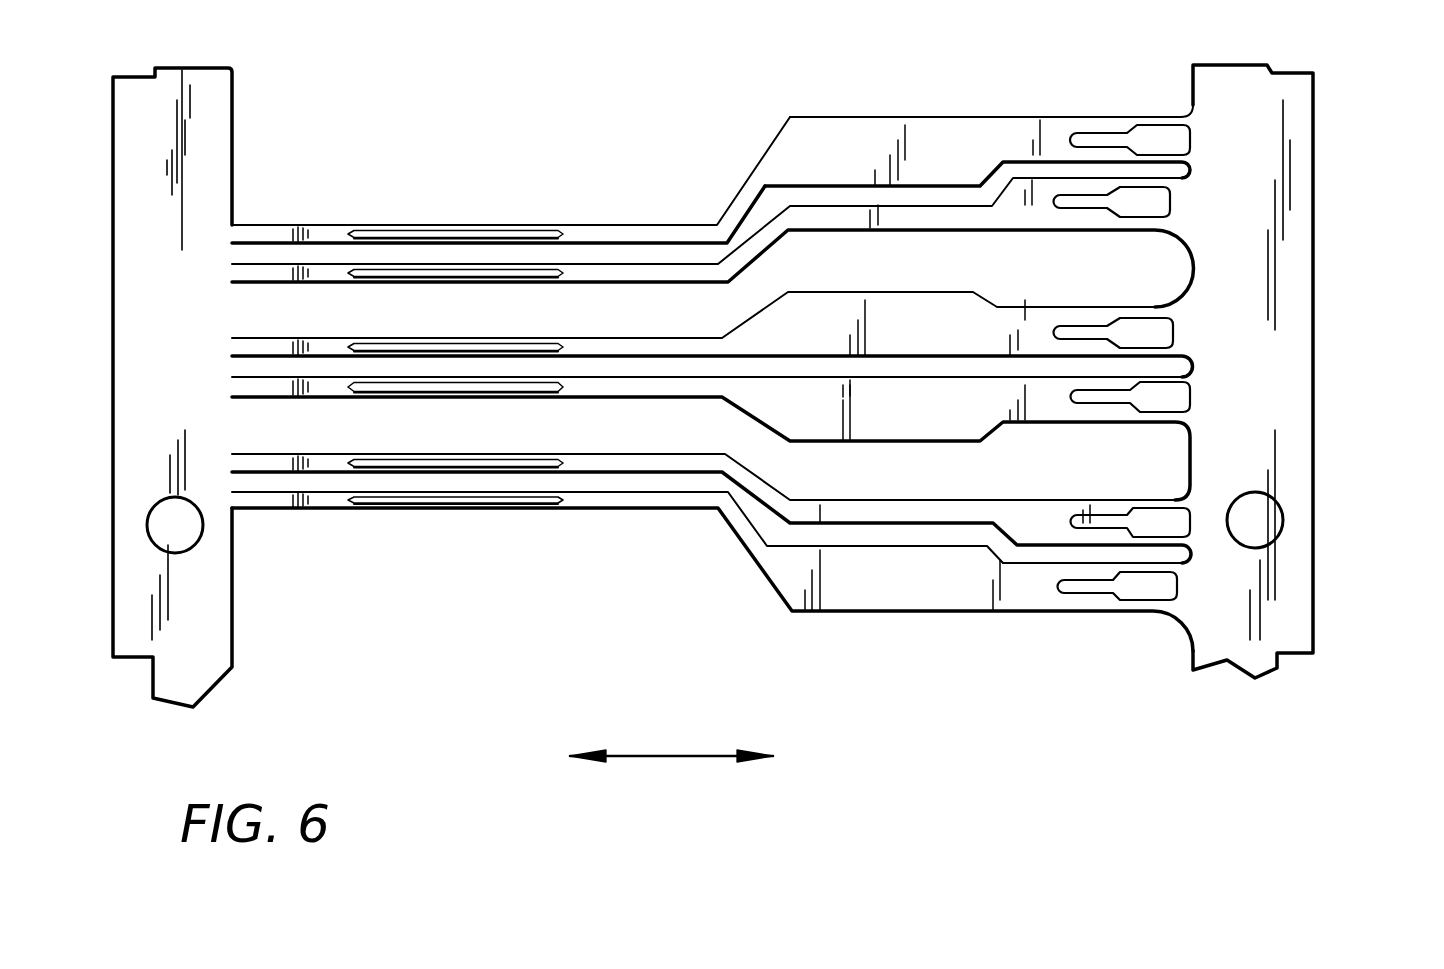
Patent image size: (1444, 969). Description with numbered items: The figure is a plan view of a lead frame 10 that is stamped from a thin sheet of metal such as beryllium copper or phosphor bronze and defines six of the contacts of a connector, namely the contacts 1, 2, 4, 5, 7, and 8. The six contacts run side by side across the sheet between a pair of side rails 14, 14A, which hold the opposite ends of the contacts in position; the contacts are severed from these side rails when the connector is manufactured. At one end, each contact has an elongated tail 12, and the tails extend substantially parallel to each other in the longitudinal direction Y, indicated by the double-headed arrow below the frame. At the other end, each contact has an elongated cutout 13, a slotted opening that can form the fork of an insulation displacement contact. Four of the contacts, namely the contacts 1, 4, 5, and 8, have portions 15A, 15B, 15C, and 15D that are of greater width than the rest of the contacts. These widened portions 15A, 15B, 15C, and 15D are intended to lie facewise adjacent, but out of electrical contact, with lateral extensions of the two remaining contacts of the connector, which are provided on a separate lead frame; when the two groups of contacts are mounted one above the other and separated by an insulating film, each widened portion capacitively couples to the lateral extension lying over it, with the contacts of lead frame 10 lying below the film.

The lead frame 10 is at (1338, 140).
The contact 1 is at (300, 228).
The contact 2 is at (310, 282).
The contact 4 is at (302, 350).
The contact 5 is at (320, 388).
The contact 7 is at (288, 462).
The contact 8 is at (295, 500).
The elongated tail 12 is at (522, 227).
The elongated cutout 13 is at (1160, 138).
The side rail 14 is at (1265, 350).
The side rail 14A is at (145, 283).
The portion of greater width 15A is at (922, 155).
The portion of greater width 15B is at (917, 322).
The portion of greater width 15C is at (907, 410).
The portion of greater width 15D is at (908, 580).
The longitudinal direction Y is at (666, 757).